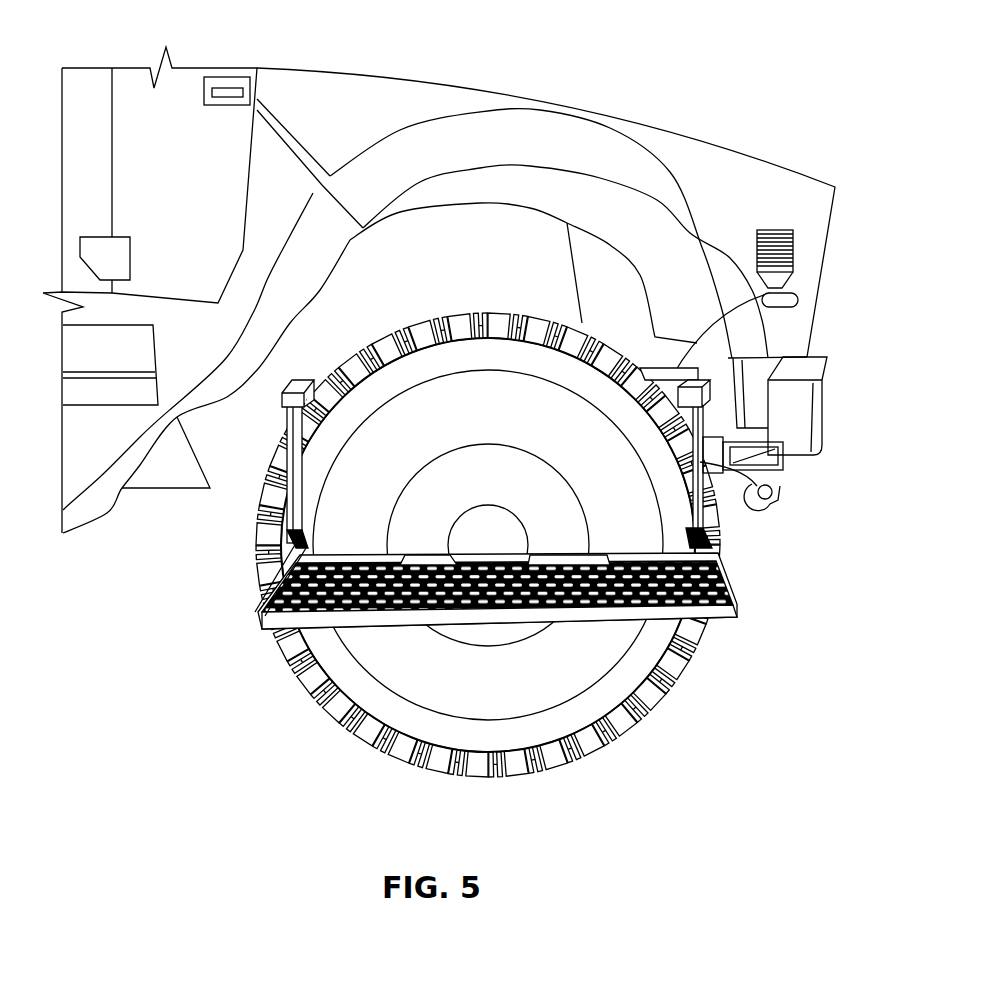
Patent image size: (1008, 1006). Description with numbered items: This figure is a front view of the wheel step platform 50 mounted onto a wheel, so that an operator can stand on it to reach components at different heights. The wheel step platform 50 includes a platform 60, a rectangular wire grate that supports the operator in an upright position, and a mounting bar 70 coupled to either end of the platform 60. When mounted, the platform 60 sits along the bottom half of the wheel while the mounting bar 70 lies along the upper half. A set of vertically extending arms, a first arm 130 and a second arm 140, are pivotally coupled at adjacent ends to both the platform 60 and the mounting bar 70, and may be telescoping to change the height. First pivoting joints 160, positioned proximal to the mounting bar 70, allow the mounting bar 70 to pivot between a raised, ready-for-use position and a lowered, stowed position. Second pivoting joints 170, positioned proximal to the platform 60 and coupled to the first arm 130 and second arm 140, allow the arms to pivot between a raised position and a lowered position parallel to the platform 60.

The wheel step platform 50 is at (732, 68).
The platform 60 is at (267, 608).
The mounting bar 70 is at (700, 378).
The first arm 130 is at (295, 480).
The second arm 140 is at (773, 504).
The first pivoting joints 160 is at (765, 297).
The second pivoting joints 170 is at (283, 543).